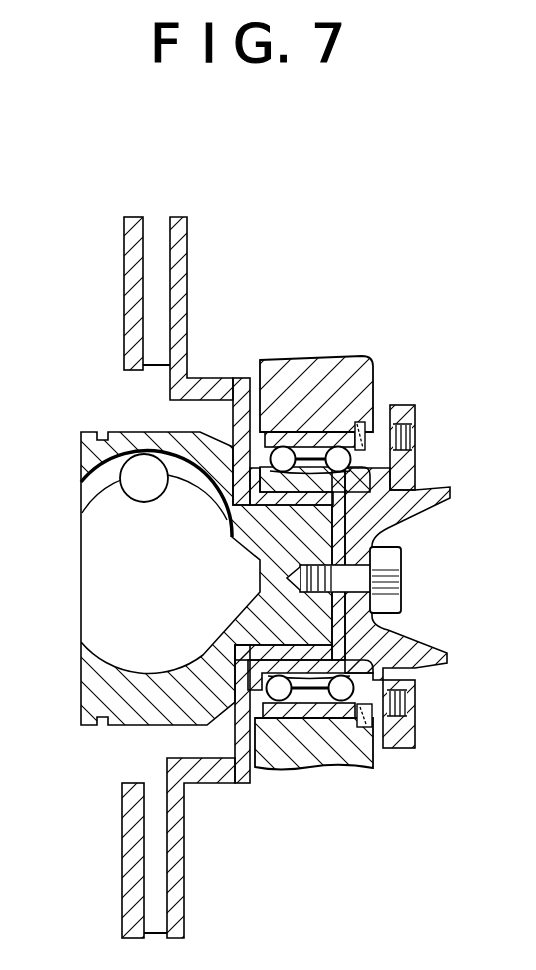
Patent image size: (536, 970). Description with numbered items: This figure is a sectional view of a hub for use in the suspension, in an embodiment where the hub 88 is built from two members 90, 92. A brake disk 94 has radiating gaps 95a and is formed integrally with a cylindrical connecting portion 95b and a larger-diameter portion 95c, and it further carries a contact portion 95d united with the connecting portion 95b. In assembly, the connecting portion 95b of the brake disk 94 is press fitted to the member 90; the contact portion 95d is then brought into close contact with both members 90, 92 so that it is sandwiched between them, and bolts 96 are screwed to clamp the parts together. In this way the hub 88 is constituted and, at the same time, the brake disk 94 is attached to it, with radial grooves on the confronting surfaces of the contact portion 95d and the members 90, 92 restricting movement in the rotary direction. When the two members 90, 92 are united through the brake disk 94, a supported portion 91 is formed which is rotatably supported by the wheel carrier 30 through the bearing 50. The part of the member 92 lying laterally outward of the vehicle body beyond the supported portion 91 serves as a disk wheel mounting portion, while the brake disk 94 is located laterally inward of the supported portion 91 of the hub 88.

The wheel carrier 30 is at (369, 364).
The bearing 50 is at (318, 436).
The hub 88 is at (420, 476).
The member 90 is at (80, 679).
The supported portion 91 is at (262, 544).
The member 92 is at (446, 489).
The brake disk 94 is at (123, 272).
The radiating gaps 95a is at (160, 226).
The cylindrical connecting portion 95b is at (275, 496).
The larger-diameter portion 95c is at (237, 418).
The contact portion 95d is at (346, 539).
The bolts 96 is at (402, 590).